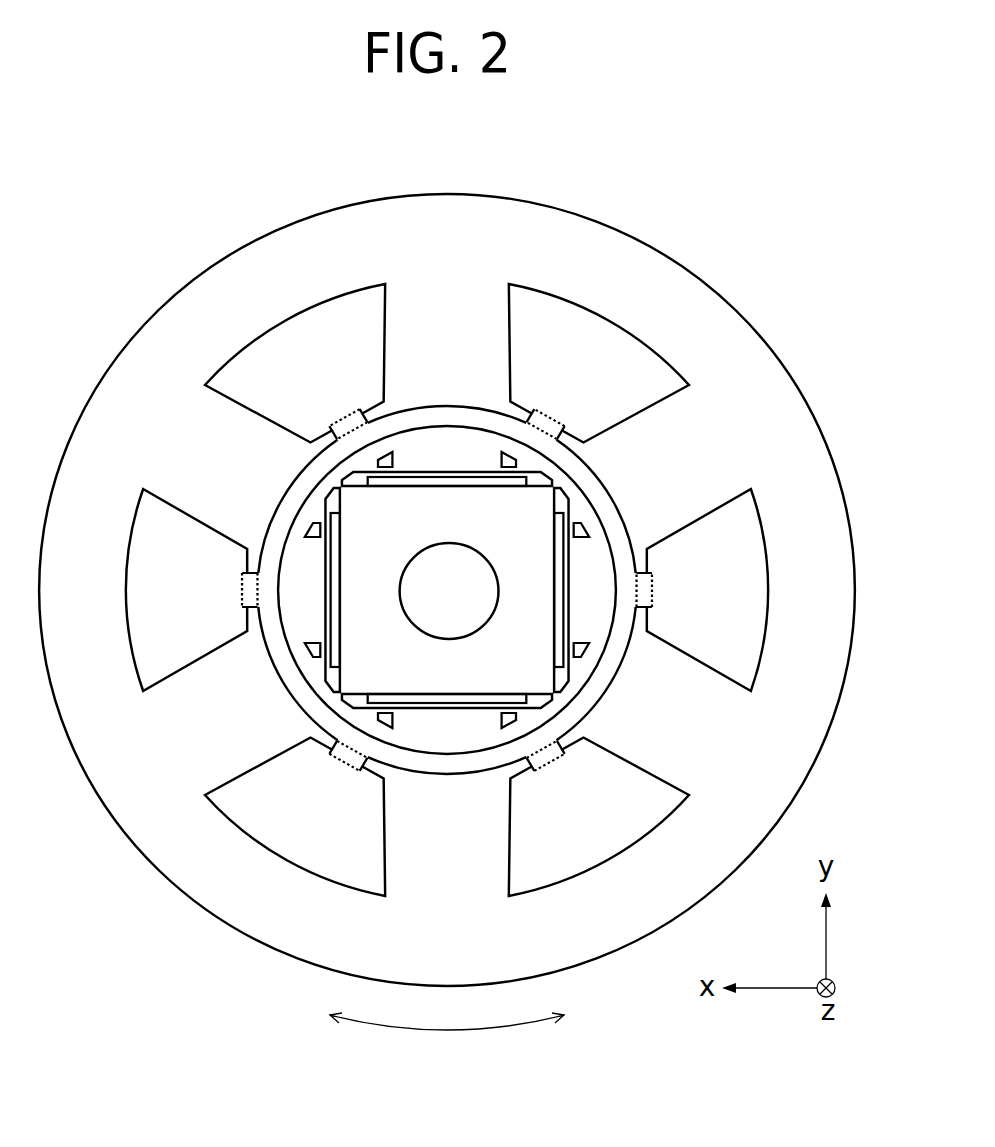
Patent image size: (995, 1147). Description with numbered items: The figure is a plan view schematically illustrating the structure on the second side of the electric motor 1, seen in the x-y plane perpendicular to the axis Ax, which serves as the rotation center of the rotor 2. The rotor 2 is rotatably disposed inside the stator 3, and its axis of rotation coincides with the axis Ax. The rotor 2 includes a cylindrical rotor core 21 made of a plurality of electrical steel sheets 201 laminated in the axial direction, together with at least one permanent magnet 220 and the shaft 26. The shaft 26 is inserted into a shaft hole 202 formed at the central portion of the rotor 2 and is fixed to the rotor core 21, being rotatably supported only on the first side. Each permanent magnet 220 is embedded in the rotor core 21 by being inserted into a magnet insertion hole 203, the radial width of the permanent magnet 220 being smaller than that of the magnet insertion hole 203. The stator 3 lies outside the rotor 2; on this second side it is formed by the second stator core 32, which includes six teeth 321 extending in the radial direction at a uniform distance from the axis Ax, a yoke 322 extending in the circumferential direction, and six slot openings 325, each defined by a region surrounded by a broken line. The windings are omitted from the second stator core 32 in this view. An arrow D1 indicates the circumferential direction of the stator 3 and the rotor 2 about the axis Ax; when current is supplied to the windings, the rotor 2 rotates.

The electric motor 1 is at (138, 211).
The rotor 2 is at (420, 422).
The stator 3 is at (444, 194).
The rotor core 21 is at (468, 450).
The shaft 26 is at (423, 573).
The second stator core 32 is at (497, 213).
The electrical steel sheets 201 is at (300, 573).
The shaft hole 202 is at (475, 570).
The magnet insertion hole 203 is at (468, 479).
The permanent magnet 220 is at (417, 480).
The tooth 321 is at (228, 468).
The yoke 322 is at (445, 240).
The slot opening 325 is at (343, 418).
The axis Ax is at (448, 590).
The arrow indicating circumferential direction D1 is at (447, 1032).